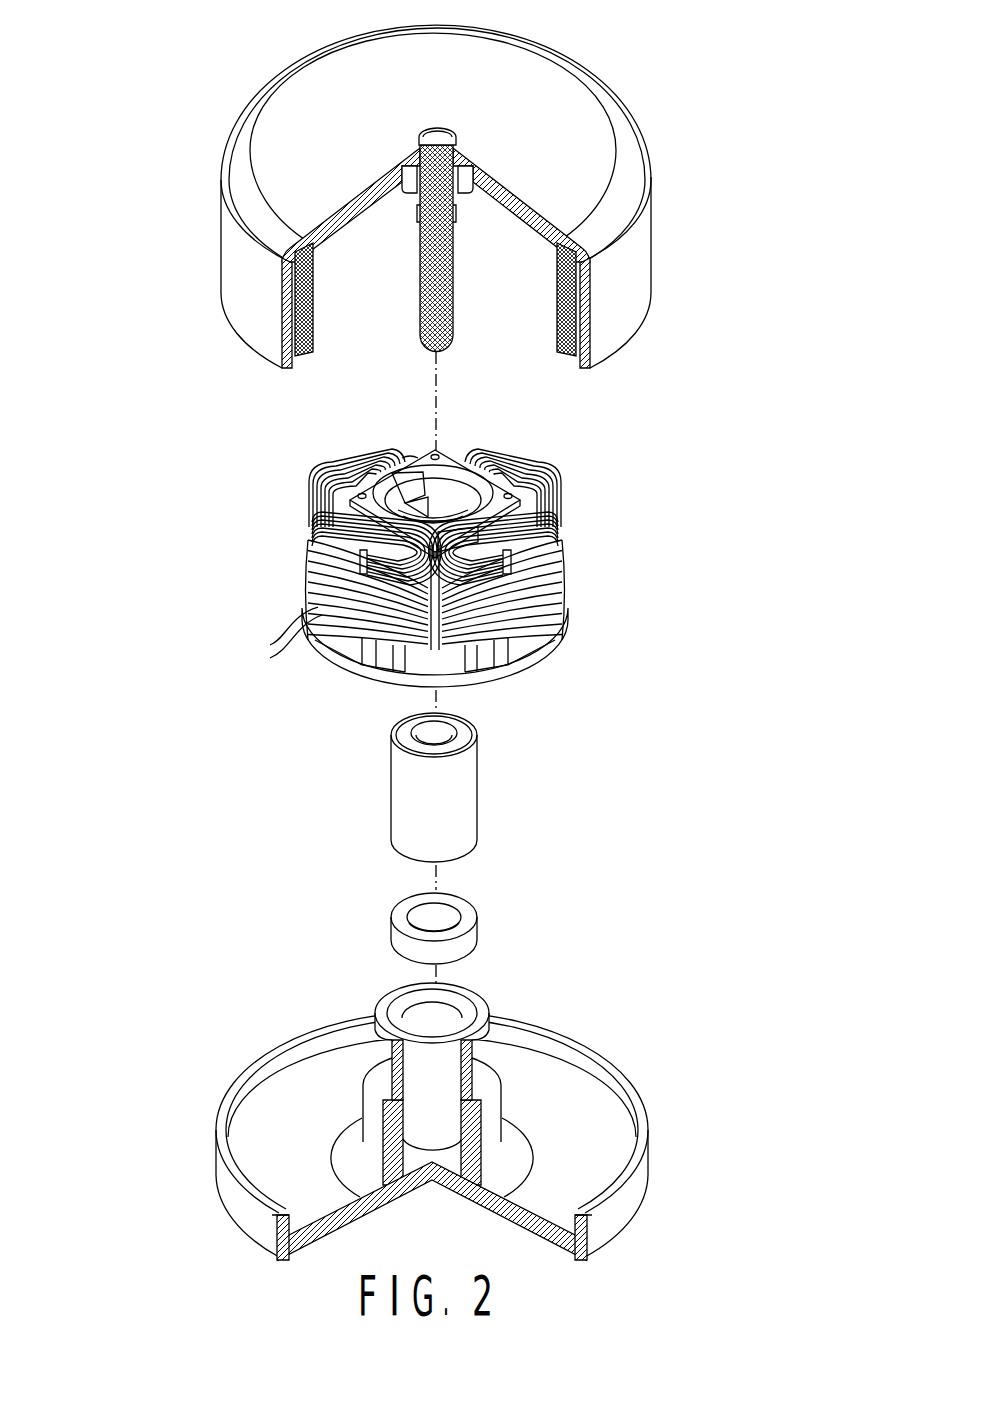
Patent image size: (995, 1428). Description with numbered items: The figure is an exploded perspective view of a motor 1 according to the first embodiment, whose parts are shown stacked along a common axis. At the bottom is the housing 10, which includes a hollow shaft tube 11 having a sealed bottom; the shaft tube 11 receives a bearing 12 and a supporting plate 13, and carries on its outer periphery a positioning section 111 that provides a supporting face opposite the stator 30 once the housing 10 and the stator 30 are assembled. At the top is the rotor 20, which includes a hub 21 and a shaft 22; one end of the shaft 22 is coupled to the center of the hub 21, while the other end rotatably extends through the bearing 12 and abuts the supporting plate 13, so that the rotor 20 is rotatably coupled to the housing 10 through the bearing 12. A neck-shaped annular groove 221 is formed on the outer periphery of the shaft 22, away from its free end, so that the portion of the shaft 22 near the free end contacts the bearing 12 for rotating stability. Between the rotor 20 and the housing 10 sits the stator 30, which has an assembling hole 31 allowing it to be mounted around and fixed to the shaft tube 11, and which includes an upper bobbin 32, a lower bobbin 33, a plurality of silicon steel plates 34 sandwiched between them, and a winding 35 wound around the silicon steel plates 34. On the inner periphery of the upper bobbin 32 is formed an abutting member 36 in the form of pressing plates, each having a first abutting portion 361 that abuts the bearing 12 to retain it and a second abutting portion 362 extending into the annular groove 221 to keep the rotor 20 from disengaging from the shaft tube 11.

The motor 1 is at (232, 103).
The housing 10 is at (454, 1114).
The shaft tube 11 is at (483, 1048).
The positioning section 111 is at (494, 1080).
The bearing 12 is at (465, 797).
The supporting plate 13 is at (470, 935).
The rotor 20 is at (482, 204).
The hub 21 is at (597, 108).
The shaft 22 is at (452, 298).
The annular groove 221 is at (455, 205).
The stator 30 is at (469, 525).
The assembling hole 31 is at (483, 490).
The upper bobbin 32 is at (530, 548).
The lower bobbin 33 is at (527, 640).
The silicon steel plates 34 is at (535, 598).
The winding 35 is at (560, 505).
The abutting member 36 is at (403, 423).
The first abutting portion 361 is at (410, 486).
The second abutting portion 362 is at (432, 493).